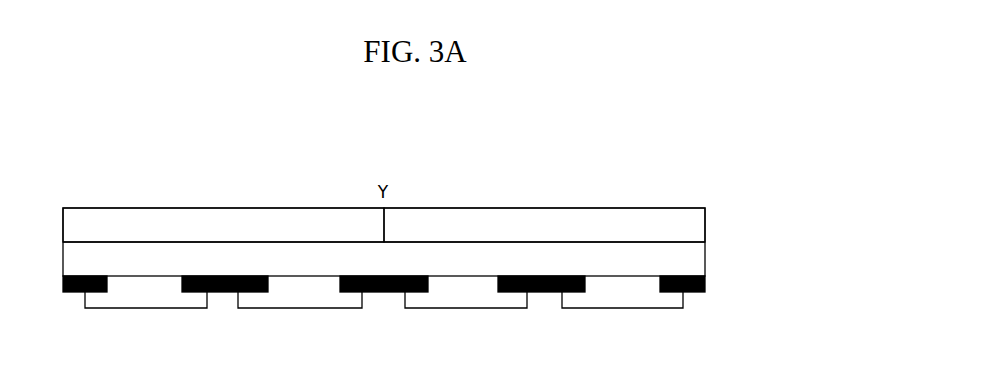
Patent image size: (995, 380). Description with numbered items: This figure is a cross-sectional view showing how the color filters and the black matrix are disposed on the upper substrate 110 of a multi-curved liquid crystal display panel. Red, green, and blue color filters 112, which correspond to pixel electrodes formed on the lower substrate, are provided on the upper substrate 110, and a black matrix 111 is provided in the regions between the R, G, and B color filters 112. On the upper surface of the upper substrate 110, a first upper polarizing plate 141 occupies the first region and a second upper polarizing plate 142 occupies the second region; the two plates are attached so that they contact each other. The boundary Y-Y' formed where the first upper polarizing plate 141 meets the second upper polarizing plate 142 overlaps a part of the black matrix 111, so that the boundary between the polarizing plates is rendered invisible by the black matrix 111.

The upper substrate 110 is at (705, 257).
The black matrix 111 is at (539, 292).
The color filters 112 is at (620, 308).
The first upper polarizing plate 141 is at (180, 208).
The second upper polarizing plate 142 is at (560, 208).